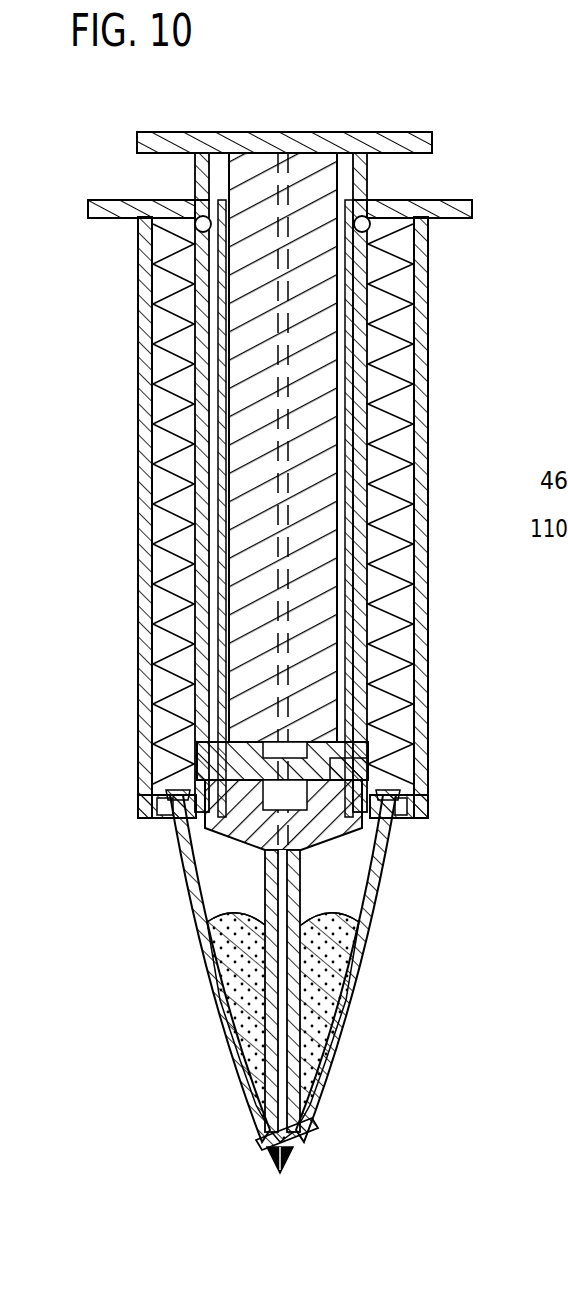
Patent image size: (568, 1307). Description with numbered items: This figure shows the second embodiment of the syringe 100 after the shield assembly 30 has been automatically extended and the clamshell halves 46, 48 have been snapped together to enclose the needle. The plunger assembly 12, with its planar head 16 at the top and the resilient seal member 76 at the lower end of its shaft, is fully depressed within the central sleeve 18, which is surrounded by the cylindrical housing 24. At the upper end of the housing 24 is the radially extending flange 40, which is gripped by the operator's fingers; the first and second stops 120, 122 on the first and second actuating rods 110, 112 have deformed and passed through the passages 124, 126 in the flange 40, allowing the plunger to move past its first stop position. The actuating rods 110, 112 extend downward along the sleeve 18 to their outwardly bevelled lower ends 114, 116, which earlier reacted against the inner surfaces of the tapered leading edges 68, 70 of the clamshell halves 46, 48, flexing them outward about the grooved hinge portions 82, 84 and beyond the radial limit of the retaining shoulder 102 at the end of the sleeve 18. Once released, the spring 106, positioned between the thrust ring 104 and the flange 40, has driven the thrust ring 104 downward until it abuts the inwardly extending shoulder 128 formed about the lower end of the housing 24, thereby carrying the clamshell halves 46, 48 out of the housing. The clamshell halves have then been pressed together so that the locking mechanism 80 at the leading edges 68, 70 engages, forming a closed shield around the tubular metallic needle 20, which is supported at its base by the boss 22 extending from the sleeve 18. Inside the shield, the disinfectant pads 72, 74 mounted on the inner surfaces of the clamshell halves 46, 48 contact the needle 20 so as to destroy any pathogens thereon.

The syringe 100 is at (117, 126).
The plunger assembly 12 is at (272, 126).
The planar head 16 is at (330, 132).
The passage in flange 124 is at (196, 200).
The passage in flange 126 is at (366, 205).
The flange 40 is at (472, 210).
The first stop 120 is at (138, 228).
The second stop 122 is at (400, 235).
The sleeve 18 is at (205, 298).
The housing 24 is at (180, 305).
The spring 106 is at (150, 322).
The first actuating rod 110 is at (160, 372).
The second actuating rod 112 is at (366, 376).
The lower end of actuating rod 114 is at (198, 775).
The lower end of actuating rod 116 is at (372, 766).
The thrust ring 104 is at (408, 780).
The shoulder 128 is at (165, 815).
The grooved hinge portion 82 is at (170, 818).
The grooved hinge portion 84 is at (392, 822).
The retaining shoulder 102 is at (386, 848).
The resilient seal member 76 is at (302, 848).
The boss 22 is at (265, 877).
The clamshell half 46 is at (202, 922).
The clamshell half 48 is at (366, 912).
The shield assembly 30 is at (190, 968).
The disinfectant pad 72 is at (232, 1003).
The disinfectant pad 74 is at (328, 1003).
The tubular metallic syringe needle 20 is at (270, 1040).
The leading edge 68 is at (258, 1140).
The leading edge 70 is at (304, 1146).
The locking mechanism 80 is at (262, 1188).